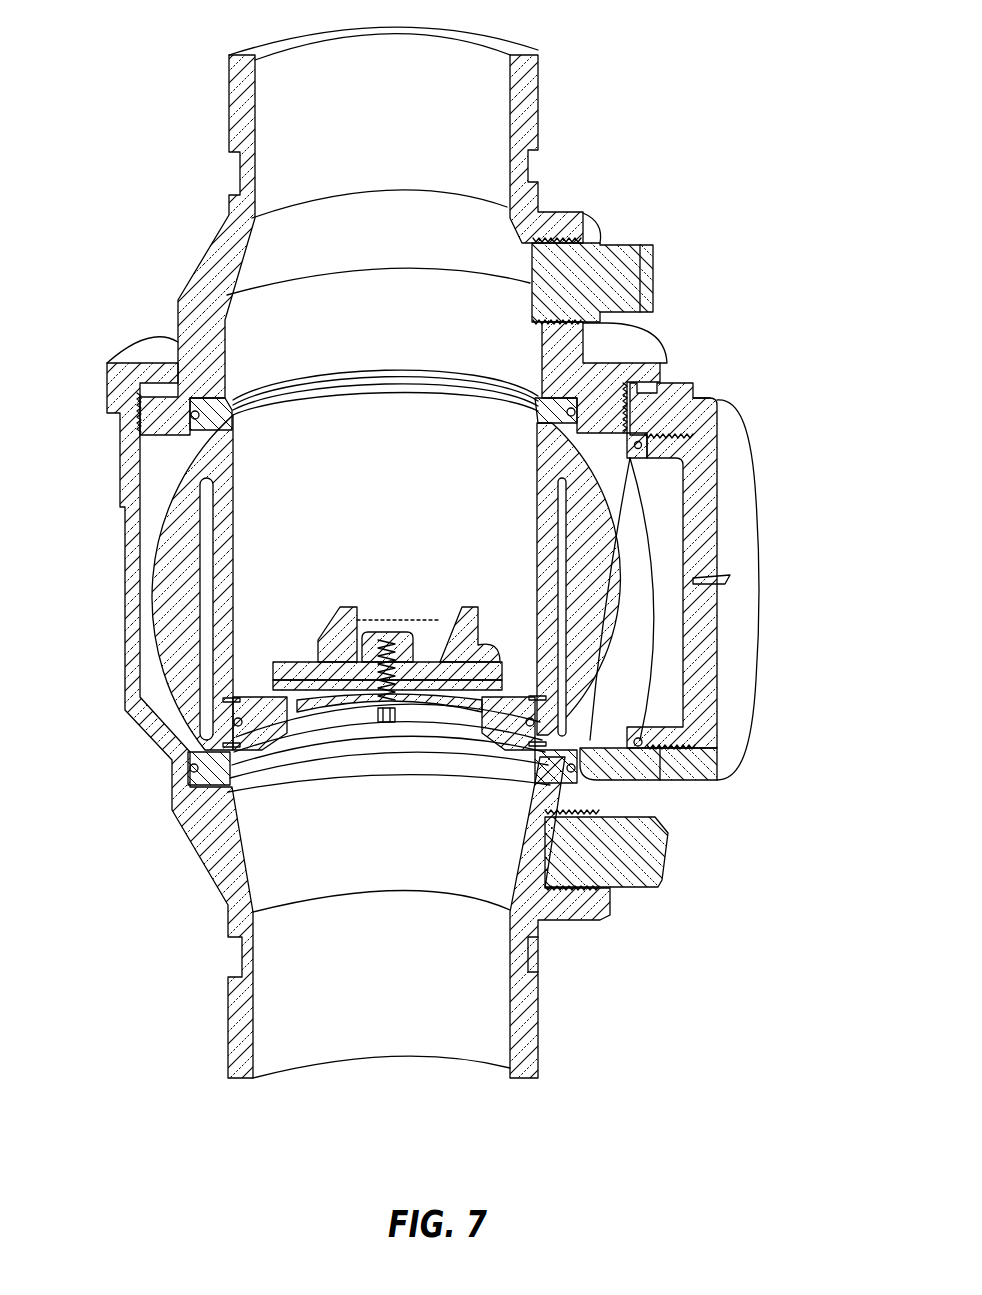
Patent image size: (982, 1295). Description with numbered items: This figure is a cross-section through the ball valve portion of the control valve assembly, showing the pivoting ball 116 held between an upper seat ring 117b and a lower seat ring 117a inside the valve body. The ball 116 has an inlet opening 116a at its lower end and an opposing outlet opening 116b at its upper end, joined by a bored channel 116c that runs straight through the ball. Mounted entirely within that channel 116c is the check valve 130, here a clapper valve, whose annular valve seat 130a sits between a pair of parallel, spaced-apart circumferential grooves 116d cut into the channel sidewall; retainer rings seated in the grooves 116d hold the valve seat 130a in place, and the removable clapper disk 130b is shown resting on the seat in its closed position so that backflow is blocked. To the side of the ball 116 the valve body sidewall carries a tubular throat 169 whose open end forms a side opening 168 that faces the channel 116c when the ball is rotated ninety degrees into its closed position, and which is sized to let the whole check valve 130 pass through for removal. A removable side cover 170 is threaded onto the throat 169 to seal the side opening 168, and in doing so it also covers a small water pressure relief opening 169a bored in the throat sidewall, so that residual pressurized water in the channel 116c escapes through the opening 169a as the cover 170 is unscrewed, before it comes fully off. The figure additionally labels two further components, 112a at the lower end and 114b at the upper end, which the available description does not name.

The lower body / inlet pipe 112a is at (240, 1078).
The upper outlet pipe 114b is at (240, 50).
The pivoting ball 116 is at (324, 582).
The inlet opening 116a is at (295, 750).
The outlet opening 116b is at (302, 400).
The channel 116c is at (270, 565).
The annular grooves 116d is at (228, 745).
The seat ring 117a is at (212, 775).
The seat ring 117b is at (205, 423).
The check valve 130 is at (326, 714).
The valve seat 130a is at (262, 720).
The clapper disk 130b is at (303, 653).
The side opening 168 is at (697, 417).
The throat 169 is at (709, 630).
The water pressure relief opening 169a is at (662, 780).
The side cover 170 is at (748, 543).